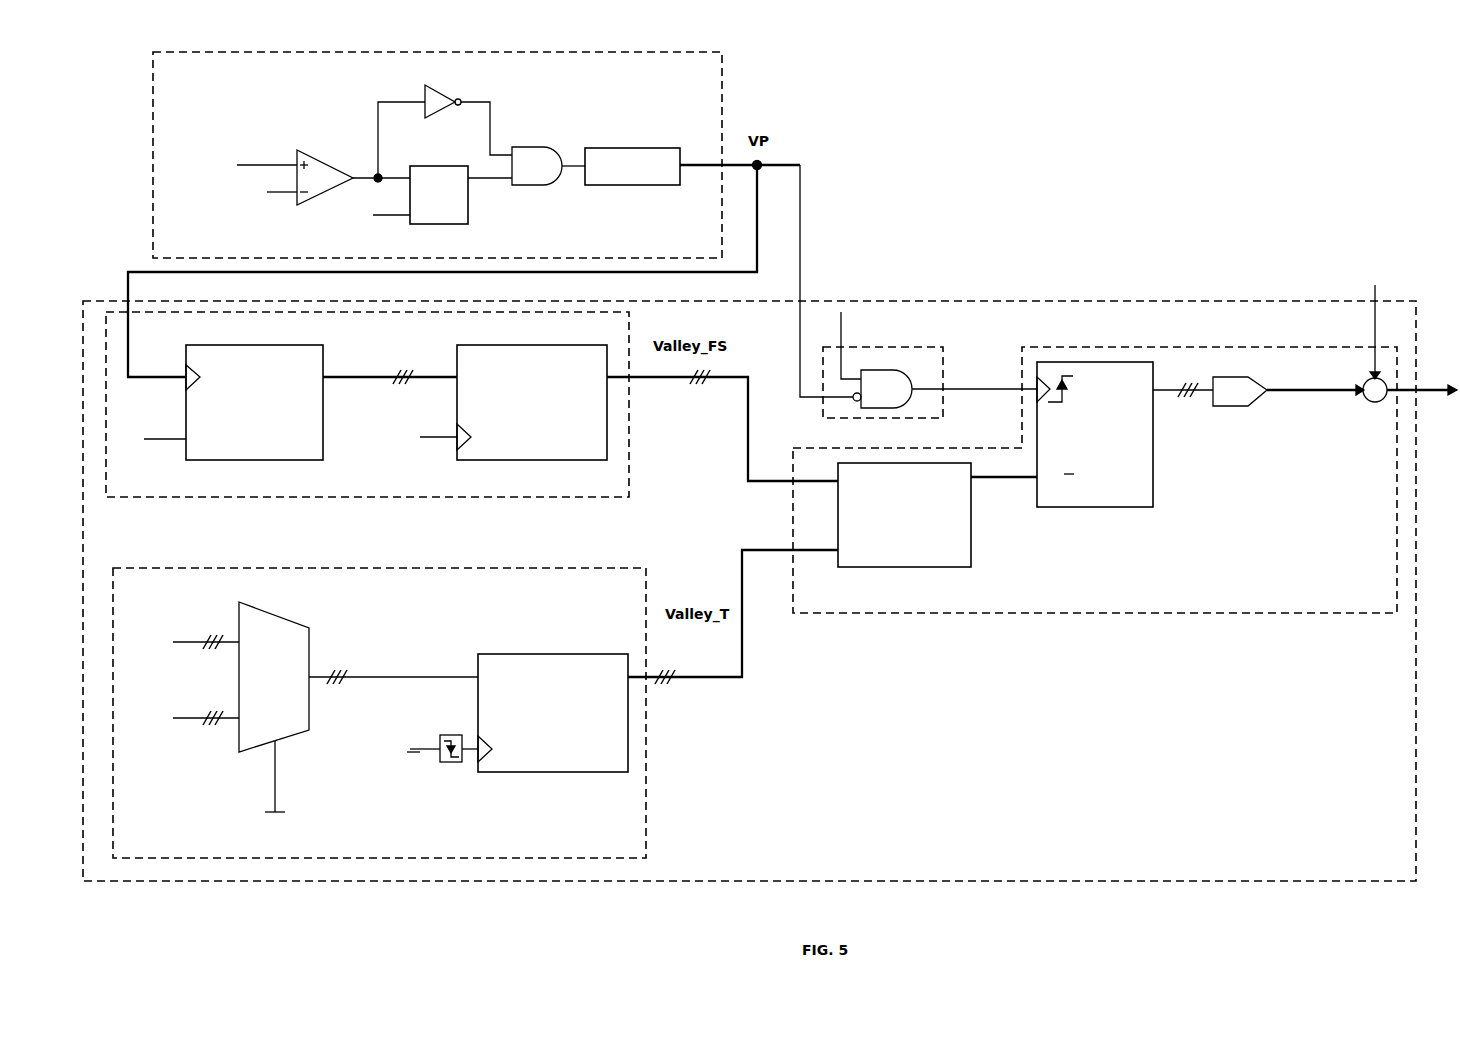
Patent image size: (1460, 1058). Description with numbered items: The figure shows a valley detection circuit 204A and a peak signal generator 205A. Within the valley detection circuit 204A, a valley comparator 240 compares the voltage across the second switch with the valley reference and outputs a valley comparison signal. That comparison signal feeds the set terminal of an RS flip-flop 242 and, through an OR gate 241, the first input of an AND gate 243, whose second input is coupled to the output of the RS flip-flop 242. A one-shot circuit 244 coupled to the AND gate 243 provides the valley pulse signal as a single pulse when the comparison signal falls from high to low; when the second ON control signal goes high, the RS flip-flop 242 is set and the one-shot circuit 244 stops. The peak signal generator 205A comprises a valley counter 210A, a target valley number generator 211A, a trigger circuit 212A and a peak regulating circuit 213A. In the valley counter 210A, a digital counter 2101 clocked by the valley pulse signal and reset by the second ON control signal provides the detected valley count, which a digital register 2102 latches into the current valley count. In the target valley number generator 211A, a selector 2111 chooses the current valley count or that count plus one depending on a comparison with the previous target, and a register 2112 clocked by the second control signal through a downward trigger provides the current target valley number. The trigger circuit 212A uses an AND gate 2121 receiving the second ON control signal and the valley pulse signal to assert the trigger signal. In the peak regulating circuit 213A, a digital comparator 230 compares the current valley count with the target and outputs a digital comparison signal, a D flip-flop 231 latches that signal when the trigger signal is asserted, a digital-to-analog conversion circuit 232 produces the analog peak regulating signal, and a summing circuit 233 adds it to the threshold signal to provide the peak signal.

The valley detection circuit 204A is at (437, 155).
The valley comparator 240 is at (311, 206).
The OR gate 241 is at (436, 114).
The RS flip-flop 242 is at (437, 225).
The AND gate 243 is at (533, 186).
The one-shot circuit 244 is at (595, 186).
The peak signal generator 205A is at (749, 591).
The valley counter 210A is at (212, 498).
The digital counter 2101 is at (289, 402).
The digital register 2102 is at (497, 402).
The target valley number generator 211A is at (376, 568).
The selector 2111 is at (310, 637).
The register 2112 is at (562, 654).
The trigger circuit 212A is at (889, 336).
The AND gate 2121 is at (928, 357).
The peak regulating circuit 213A is at (1195, 614).
The digital comparator 230 is at (908, 568).
The D flip-flop 231 is at (1153, 491).
The digital-to-analog conversion circuit 232 is at (1236, 407).
The summing circuit 233 is at (1373, 403).